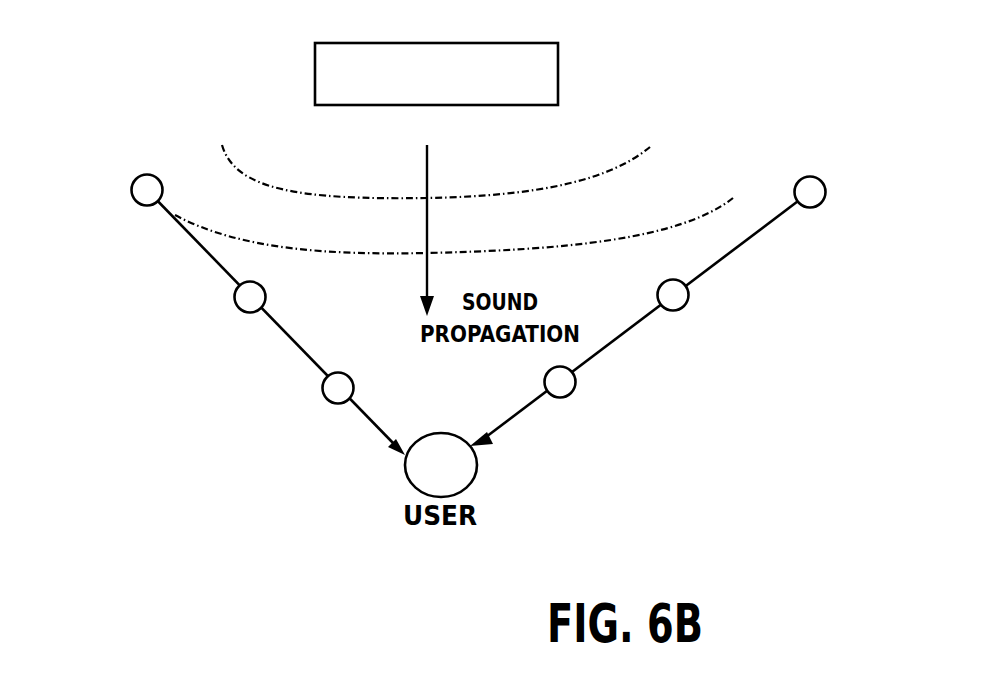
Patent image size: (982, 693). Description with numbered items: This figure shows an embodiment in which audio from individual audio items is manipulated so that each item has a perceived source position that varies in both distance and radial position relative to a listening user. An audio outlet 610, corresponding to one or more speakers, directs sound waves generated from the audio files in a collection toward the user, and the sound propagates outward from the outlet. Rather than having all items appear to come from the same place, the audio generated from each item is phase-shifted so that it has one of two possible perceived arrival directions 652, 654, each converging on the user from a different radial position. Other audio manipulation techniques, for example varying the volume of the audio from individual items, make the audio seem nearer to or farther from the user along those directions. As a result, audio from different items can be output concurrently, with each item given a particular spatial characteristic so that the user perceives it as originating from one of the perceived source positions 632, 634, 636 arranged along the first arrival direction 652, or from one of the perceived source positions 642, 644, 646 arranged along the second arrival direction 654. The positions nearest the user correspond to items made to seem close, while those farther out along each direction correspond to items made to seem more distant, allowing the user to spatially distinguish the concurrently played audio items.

The audio outlet 610 is at (436, 74).
The perceived source position 632 is at (325, 396).
The perceived source position 634 is at (235, 299).
The perceived source position 636 is at (131, 190).
The perceived source position 642 is at (572, 394).
The perceived source position 644 is at (689, 300).
The perceived source position 646 is at (827, 191).
The perceived arrival direction 652 is at (383, 433).
The perceived arrival direction 654 is at (503, 425).